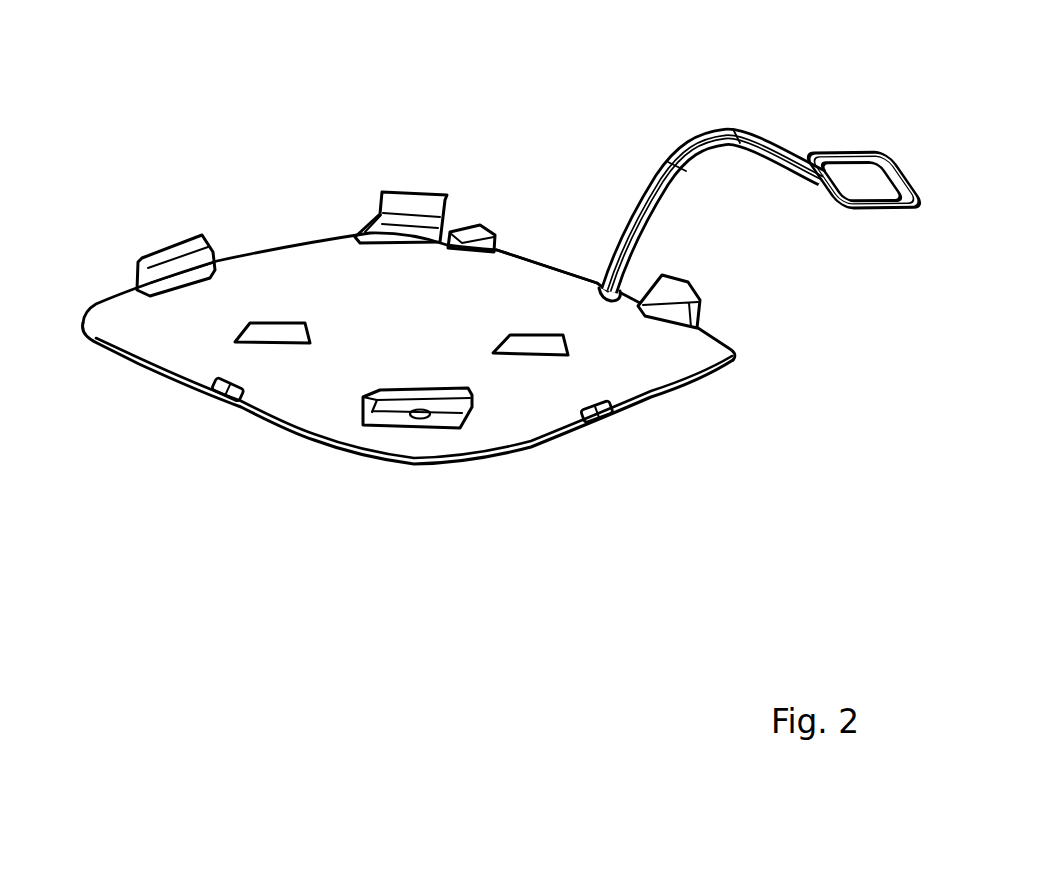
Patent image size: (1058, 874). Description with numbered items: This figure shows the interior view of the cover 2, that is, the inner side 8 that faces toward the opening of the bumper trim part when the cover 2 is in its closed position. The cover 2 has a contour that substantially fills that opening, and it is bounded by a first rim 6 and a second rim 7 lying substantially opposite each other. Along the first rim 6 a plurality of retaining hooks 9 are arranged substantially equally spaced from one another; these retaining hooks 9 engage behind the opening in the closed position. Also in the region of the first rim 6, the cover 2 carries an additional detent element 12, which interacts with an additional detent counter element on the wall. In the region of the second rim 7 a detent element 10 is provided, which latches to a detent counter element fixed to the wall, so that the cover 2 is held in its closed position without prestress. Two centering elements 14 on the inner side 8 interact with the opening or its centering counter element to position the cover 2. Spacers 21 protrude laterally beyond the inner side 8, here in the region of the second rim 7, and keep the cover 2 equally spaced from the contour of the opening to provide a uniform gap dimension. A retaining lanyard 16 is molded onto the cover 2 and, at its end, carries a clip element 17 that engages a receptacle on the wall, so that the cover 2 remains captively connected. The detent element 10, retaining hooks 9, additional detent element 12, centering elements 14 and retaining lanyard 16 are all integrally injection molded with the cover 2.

The cover 2 is at (293, 265).
The first rim 6 is at (543, 268).
The second rim 7 is at (348, 409).
The inner side 8 is at (179, 338).
The retaining hooks 9 is at (174, 250).
The detent element 10 is at (447, 415).
The additional detent element 12 is at (499, 245).
The centering elements 14 is at (268, 333).
The retaining lanyard 16 is at (714, 114).
The clip element 17 is at (880, 178).
The spacers 21 is at (220, 400).